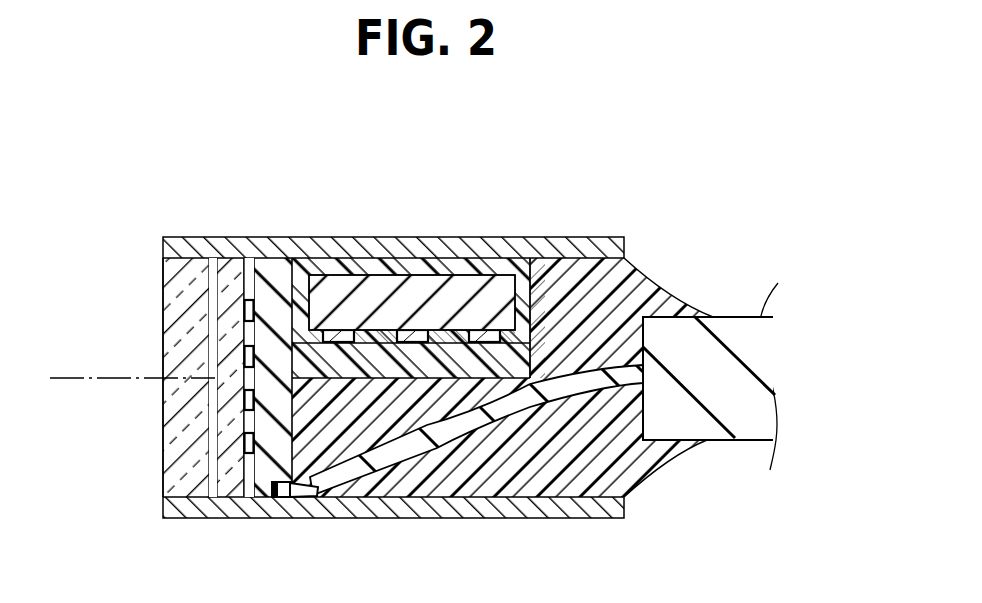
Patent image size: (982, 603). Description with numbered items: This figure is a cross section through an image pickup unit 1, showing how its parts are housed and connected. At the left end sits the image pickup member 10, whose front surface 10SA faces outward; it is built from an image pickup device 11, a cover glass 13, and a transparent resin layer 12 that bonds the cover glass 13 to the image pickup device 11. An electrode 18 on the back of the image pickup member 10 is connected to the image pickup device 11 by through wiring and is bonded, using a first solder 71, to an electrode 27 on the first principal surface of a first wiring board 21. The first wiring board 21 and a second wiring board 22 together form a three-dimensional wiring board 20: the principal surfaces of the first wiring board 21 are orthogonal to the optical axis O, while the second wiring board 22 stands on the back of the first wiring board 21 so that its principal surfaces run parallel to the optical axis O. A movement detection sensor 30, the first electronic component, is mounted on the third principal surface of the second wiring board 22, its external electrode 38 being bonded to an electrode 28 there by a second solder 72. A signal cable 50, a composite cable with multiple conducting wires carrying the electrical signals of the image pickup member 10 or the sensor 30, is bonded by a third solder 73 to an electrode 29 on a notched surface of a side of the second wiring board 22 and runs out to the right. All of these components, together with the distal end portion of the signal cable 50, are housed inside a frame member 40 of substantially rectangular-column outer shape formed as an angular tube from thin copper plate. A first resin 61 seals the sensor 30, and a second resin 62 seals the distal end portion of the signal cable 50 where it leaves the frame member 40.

The image pickup unit 1 is at (690, 178).
The image pickup member 10 is at (138, 176).
The front surface 10SA is at (160, 457).
The image pickup device 11 is at (232, 262).
The transparent resin layer 12 is at (212, 262).
The cover glass 13 is at (195, 275).
The electrode 18 is at (240, 445).
The three-dimensional wiring board 20 is at (352, 176).
The first wiring board 21 is at (272, 262).
The second wiring board 22 is at (312, 318).
The electrode 27 is at (275, 484).
The electrode 28 is at (478, 348).
The electrode 29 is at (272, 490).
The movement detection sensor 30 is at (418, 275).
The external electrode 38 is at (388, 285).
The frame member 40 is at (590, 236).
The signal cable 50 is at (733, 443).
The first resin 61 is at (486, 258).
The second resin 62 is at (663, 449).
The first solder 71 is at (256, 452).
The second solder 72 is at (440, 340).
The third solder 73 is at (307, 492).
The optical axis O is at (117, 377).